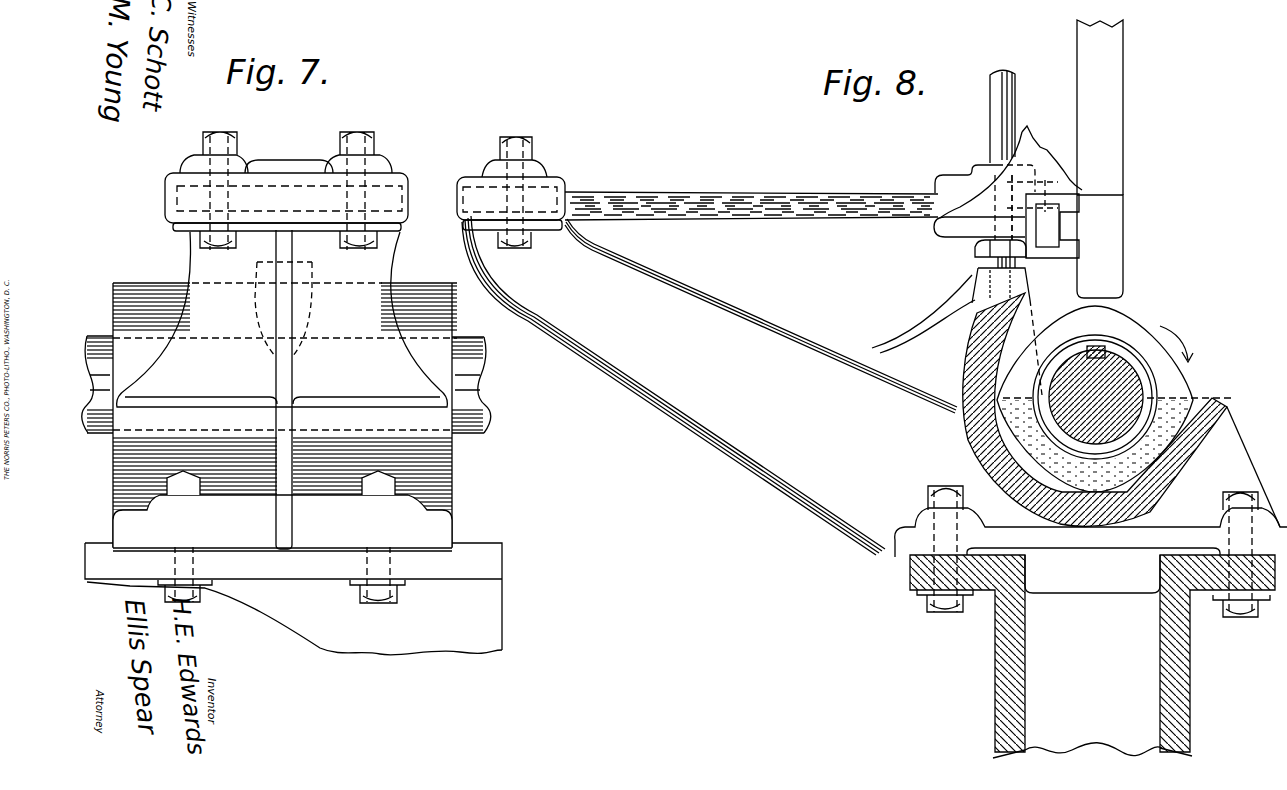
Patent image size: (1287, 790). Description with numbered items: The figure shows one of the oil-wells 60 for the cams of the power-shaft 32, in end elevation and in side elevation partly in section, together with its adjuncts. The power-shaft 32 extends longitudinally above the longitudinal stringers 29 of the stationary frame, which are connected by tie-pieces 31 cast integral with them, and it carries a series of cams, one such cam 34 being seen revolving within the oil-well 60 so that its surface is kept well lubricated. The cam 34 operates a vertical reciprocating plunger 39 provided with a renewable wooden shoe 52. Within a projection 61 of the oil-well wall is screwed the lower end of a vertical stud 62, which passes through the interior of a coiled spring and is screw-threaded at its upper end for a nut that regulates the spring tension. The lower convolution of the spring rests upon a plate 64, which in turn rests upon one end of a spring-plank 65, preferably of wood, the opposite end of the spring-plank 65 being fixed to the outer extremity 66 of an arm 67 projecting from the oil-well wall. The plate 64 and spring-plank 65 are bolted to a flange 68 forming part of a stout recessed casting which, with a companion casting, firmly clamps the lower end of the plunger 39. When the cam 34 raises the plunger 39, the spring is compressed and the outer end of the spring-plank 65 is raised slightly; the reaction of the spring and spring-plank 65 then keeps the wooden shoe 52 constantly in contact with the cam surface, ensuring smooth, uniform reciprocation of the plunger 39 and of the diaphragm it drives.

In FIG. 8, the longitudinal stringers 29 is at (1007, 690).
In FIG. 8, the tie-pieces 31 is at (1093, 655).
In FIG. 7, the power-shaft 32 is at (481, 418).
In FIG. 8, the power-shaft 32 is at (1120, 357).
In FIG. 8, the cam 34 is at (1180, 390).
In FIG. 8, the reciprocating plunger 39 is at (1108, 152).
In FIG. 8, the wooden shoe 52 is at (1113, 243).
In FIG. 8, the oil-well 60 is at (1212, 402).
In FIG. 7, the projection 61 is at (310, 283).
In FIG. 8, the projection 61 is at (972, 291).
In FIG. 8, the vertical stud 62 is at (1000, 113).
In FIG. 8, the plate 64 is at (936, 183).
In FIG. 7, the spring-plank 65 is at (393, 208).
In FIG. 8, the spring-plank 65 is at (783, 192).
In FIG. 7, the outer extremity of arm 66 is at (280, 190).
In FIG. 8, the outer extremity of arm 66 is at (546, 200).
In FIG. 7, the arm 67 is at (288, 388).
In FIG. 8, the arm 67 is at (718, 385).
In FIG. 8, the flange 68 is at (957, 230).